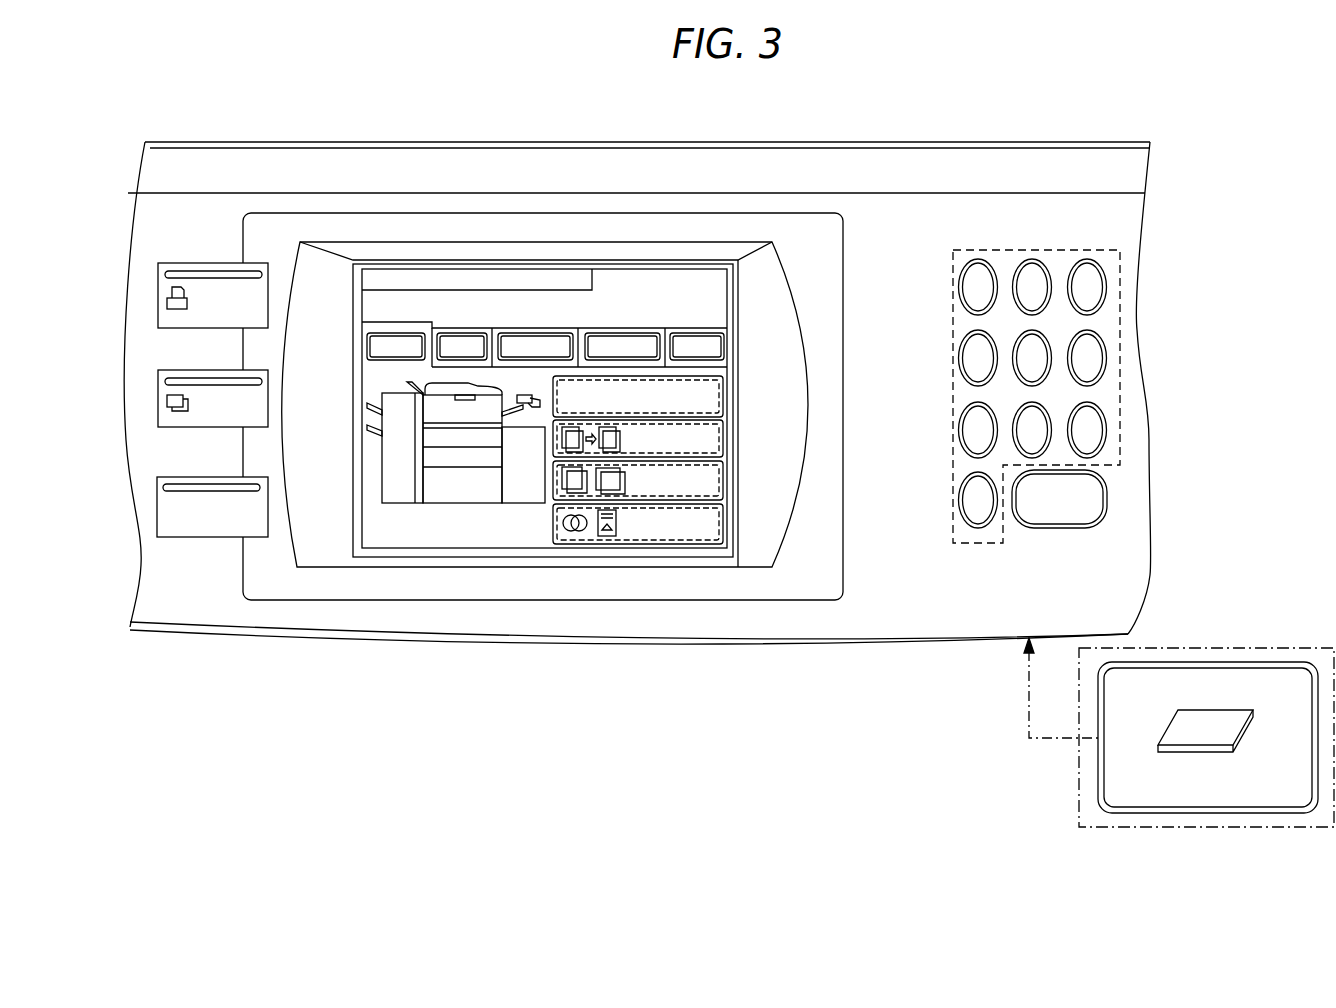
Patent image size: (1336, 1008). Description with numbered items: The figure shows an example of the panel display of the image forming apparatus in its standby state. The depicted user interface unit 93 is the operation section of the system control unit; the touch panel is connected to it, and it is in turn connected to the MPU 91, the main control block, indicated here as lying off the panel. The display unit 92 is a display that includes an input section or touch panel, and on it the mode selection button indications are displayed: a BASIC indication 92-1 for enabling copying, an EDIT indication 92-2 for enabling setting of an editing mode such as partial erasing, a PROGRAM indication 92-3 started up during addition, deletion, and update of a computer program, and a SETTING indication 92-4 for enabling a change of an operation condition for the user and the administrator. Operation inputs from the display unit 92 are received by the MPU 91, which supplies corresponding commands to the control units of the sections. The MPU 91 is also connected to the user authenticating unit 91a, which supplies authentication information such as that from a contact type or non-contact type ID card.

The user interface unit 93 is at (897, 600).
The display unit 92 is at (740, 302).
The BASIC indication 92-1 is at (367, 345).
The EDIT indication 92-2 is at (462, 332).
The PROGRAM indication 92-3 is at (540, 332).
The SETTING indication 92-4 is at (654, 332).
The main control block (MPU) 91 is at (1029, 729).
The user authenticating unit 91a is at (1189, 648).